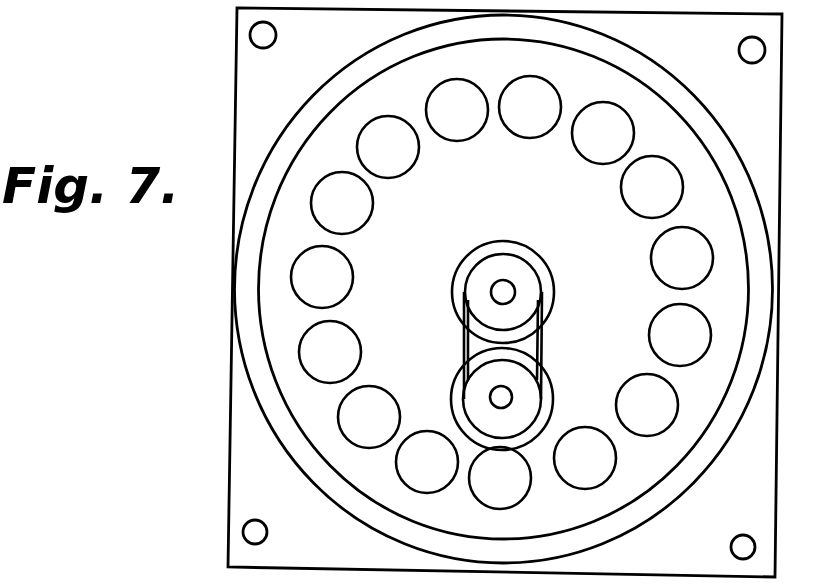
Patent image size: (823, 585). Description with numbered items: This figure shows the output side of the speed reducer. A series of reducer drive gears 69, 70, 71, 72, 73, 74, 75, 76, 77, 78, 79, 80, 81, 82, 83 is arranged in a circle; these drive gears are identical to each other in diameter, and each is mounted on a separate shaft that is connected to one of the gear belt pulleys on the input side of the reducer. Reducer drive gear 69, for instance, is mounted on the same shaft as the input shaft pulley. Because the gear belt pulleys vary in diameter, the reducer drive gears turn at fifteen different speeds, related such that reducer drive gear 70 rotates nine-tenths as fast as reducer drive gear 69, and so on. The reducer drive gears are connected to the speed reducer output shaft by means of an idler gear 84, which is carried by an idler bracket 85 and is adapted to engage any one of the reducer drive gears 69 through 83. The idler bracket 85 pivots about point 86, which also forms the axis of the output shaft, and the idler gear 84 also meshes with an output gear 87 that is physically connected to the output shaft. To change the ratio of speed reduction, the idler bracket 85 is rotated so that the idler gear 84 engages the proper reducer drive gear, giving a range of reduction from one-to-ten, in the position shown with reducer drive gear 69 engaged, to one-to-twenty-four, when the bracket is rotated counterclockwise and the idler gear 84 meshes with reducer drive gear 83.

The reducer drive gear 69 is at (528, 494).
The reducer drive gear 70 is at (428, 494).
The reducer drive gear 71 is at (391, 396).
The reducer drive gear 72 is at (361, 338).
The reducer drive gear 73 is at (354, 277).
The reducer drive gear 74 is at (370, 218).
The reducer drive gear 75 is at (410, 170).
The reducer drive gear 76 is at (463, 142).
The reducer drive gear 77 is at (533, 139).
The reducer drive gear 78 is at (589, 162).
The reducer drive gear 79 is at (626, 210).
The reducer drive gear 80 is at (652, 274).
The reducer drive gear 81 is at (649, 334).
The reducer drive gear 82 is at (627, 391).
The reducer drive gear 83 is at (592, 427).
The idler gear 84 is at (548, 377).
The idler bracket 85 is at (466, 356).
The pivot point 86 is at (508, 282).
The output gear 87 is at (503, 218).